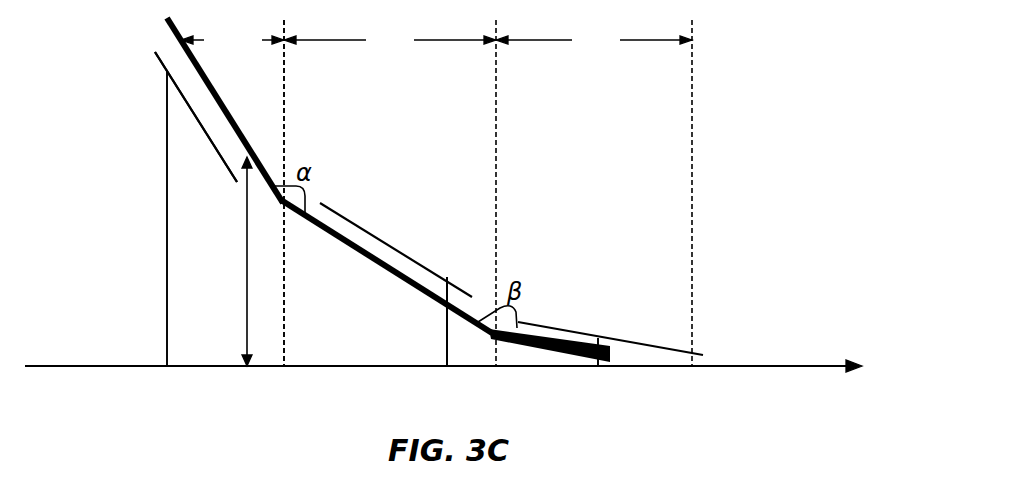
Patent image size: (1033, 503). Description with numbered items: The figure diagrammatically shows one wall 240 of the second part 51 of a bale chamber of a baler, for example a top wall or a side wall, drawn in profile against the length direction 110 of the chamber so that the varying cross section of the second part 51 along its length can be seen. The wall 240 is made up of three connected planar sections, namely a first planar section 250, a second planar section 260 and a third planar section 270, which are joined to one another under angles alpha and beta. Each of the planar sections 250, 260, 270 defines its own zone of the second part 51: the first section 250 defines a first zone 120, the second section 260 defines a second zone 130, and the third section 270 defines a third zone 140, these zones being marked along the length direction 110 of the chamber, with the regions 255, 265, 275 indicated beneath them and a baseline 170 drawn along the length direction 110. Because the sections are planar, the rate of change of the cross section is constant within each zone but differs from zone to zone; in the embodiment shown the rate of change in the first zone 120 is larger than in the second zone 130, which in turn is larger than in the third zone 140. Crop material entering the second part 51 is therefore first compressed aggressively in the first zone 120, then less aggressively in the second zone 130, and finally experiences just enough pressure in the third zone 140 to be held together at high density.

The wall 240 is at (122, 52).
The first planar section 250 is at (232, 114).
The second planar section 260 is at (358, 248).
The third planar section 270 is at (557, 338).
The first height dimension region 255 is at (199, 237).
The second region 265 is at (365, 212).
The third region 275 is at (522, 340).
The length direction 110 is at (795, 369).
The baseline reference surface 170 is at (437, 386).
The second part 51 is at (725, 203).
The first zone 120 is at (232, 40).
The second zone 130 is at (390, 40).
The third zone 140 is at (594, 40).